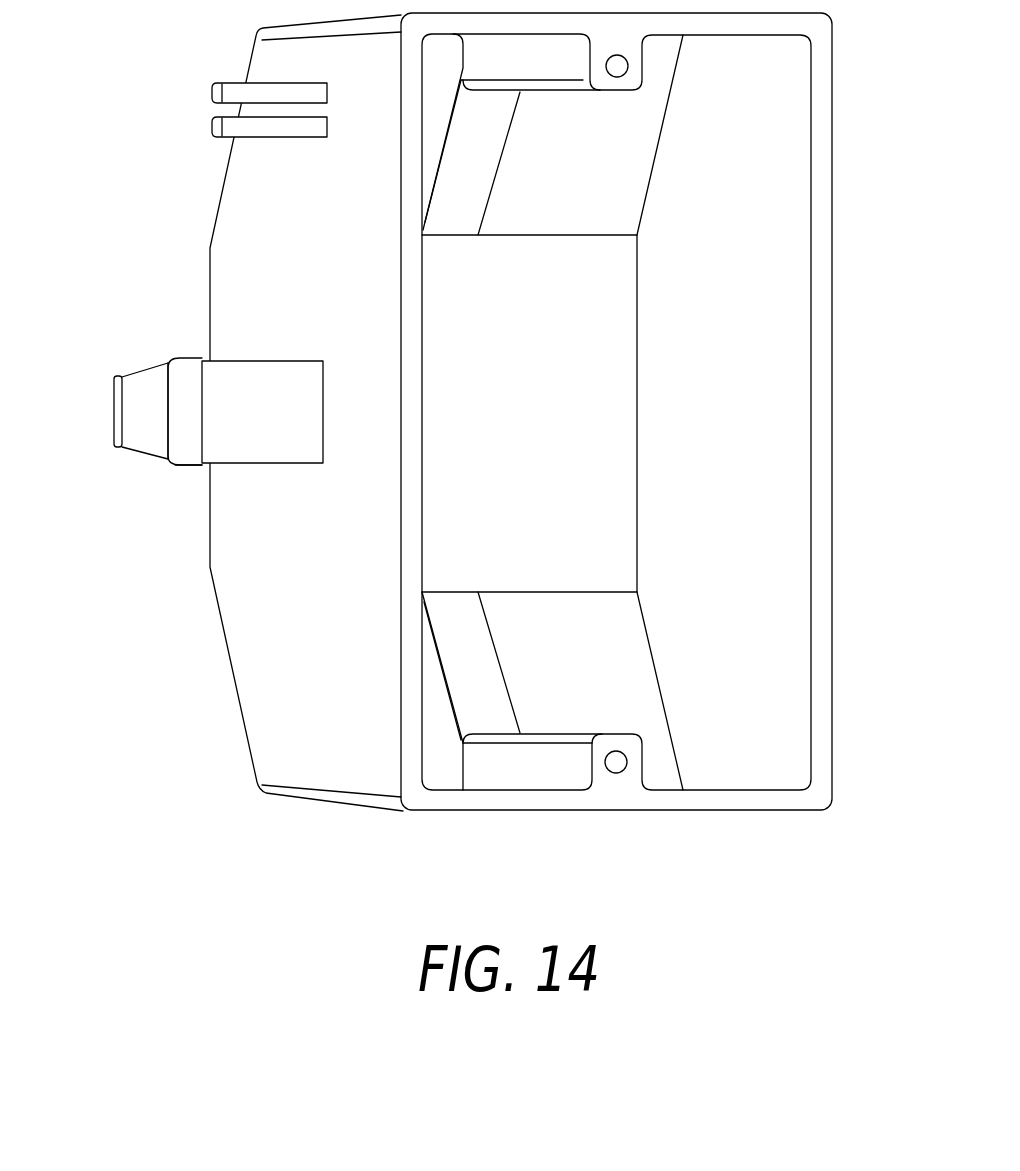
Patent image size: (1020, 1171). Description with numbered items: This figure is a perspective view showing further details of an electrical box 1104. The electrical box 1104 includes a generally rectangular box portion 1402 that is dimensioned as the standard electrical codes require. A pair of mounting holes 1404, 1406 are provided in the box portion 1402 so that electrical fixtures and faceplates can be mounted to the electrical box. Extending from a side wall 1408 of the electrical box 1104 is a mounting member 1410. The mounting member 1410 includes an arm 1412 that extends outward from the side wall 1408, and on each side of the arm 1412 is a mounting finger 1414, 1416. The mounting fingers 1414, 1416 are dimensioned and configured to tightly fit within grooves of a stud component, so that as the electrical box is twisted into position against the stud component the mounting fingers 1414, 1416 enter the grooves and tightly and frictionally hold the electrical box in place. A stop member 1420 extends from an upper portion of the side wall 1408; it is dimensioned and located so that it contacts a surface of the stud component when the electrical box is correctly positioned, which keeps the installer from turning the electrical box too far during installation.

The box portion 1402 is at (833, 307).
The electrical box 1104 is at (780, 432).
The mounting hole 1404 is at (615, 67).
The mounting hole 1406 is at (617, 762).
The side wall 1408 is at (250, 678).
The mounting member 1410 is at (115, 447).
The arm 1412 is at (185, 357).
The mounting finger 1414 is at (115, 376).
The mounting finger 1416 is at (183, 466).
The stop member 1420 is at (240, 83).